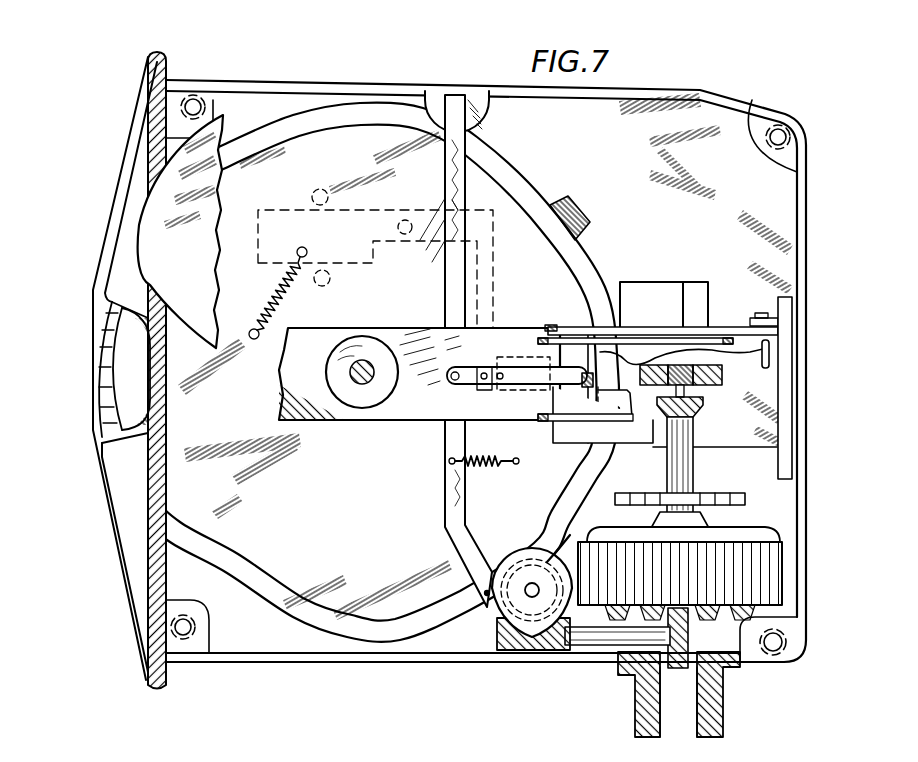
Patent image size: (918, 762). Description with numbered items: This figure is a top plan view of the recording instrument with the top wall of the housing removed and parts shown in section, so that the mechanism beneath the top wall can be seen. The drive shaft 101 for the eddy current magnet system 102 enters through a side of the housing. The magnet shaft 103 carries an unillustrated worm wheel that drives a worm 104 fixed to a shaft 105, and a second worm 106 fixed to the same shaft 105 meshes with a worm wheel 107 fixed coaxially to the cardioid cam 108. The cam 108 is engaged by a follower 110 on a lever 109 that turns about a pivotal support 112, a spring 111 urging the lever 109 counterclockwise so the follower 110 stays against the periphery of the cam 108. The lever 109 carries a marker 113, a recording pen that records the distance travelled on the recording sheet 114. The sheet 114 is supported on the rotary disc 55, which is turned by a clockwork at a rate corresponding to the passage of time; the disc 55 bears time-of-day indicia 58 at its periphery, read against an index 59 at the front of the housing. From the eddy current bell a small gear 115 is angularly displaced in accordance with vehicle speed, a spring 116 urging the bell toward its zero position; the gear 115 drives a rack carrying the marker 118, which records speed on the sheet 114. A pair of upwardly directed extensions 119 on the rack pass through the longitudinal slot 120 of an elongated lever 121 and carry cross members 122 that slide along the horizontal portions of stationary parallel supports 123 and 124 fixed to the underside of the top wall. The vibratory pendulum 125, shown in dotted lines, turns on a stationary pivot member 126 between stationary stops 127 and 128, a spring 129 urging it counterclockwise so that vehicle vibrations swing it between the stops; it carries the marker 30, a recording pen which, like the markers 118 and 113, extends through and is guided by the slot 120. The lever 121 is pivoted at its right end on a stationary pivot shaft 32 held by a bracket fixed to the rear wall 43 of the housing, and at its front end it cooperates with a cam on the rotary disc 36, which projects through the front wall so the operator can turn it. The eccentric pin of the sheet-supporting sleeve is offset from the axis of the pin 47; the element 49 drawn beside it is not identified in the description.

The rotary disc 36 is at (148, 215).
The indicia 58 is at (118, 330).
The index 59 is at (90, 372).
The pivotal support 112 is at (457, 99).
The recording sheet 114 is at (377, 124).
The rotary disc 55 is at (537, 194).
The vibratory pendulum 125 is at (362, 222).
The stationary pivot member 126 is at (406, 235).
The stationary stop 127 is at (312, 199).
The stationary stop 128 is at (331, 278).
The spring 129 is at (288, 270).
The pin 47 is at (370, 363).
The hub 49 is at (333, 356).
The marker 113 is at (447, 382).
The elongated lever 121 is at (400, 412).
The marker 30 is at (483, 394).
The marker 118 is at (499, 356).
The slot 120 is at (523, 370).
The upwardly directed extensions 119 is at (585, 372).
The support 123 is at (620, 330).
The cross members 122 is at (658, 347).
The stationary pivot shaft 32 is at (762, 352).
The small gear 115 is at (704, 382).
The rear wall 43 is at (794, 468).
The spring 116 is at (698, 501).
The support 124 is at (608, 430).
The lever 109 is at (459, 472).
The spring 111 is at (506, 463).
The cardioid cam 108 is at (546, 562).
The worm wheel 107 is at (514, 578).
The follower 110 is at (486, 597).
The second worm 106 is at (522, 645).
The shaft 105 is at (600, 645).
The worm 104 is at (641, 662).
The magnet shaft 103 is at (676, 611).
The eddy current magnet system 102 is at (776, 566).
The drive shaft 101 is at (688, 728).